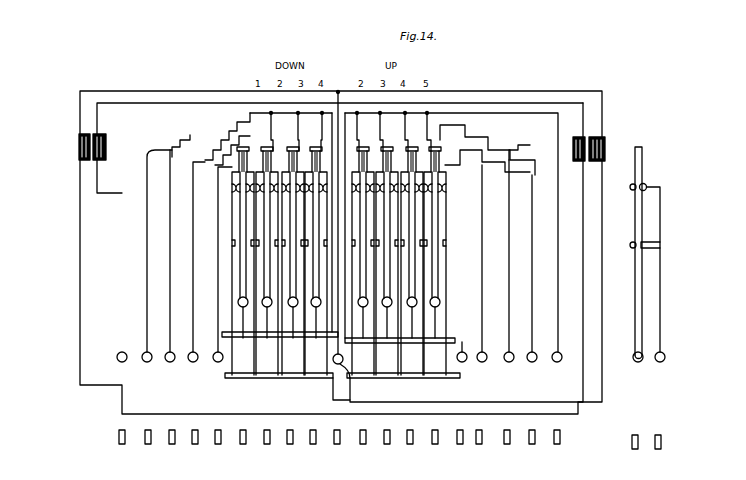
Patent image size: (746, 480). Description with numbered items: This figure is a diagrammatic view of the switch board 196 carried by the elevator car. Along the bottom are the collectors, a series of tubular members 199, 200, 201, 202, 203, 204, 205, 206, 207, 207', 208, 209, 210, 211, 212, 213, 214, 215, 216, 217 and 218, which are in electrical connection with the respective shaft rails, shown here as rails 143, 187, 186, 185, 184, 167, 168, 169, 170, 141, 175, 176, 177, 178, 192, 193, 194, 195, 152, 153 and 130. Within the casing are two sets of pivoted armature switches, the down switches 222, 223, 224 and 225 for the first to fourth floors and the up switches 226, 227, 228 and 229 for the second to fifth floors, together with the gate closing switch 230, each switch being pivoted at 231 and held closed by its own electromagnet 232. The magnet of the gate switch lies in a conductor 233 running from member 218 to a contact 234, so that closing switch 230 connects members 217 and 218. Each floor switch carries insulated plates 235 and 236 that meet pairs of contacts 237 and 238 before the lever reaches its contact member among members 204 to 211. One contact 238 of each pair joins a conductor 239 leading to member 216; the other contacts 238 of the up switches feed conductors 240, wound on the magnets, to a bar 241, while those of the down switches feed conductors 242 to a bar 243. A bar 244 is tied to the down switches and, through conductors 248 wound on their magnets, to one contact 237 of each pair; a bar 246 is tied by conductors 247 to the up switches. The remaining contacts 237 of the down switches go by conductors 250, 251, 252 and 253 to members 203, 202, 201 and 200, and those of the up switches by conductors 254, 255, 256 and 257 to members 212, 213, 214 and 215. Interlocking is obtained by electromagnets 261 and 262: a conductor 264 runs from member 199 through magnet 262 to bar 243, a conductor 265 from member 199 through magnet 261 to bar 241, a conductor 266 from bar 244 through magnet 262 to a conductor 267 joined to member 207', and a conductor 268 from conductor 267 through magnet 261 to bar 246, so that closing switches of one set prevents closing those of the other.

The rail 130 is at (661, 441).
The rail 141 is at (337, 446).
The rail 143 is at (120, 447).
The rail 152 is at (556, 446).
The rail 153 is at (632, 441).
The rail 167 is at (242, 446).
The rail 168 is at (264, 447).
The rail 169 is at (289, 446).
The rail 170 is at (313, 446).
The rail 175 is at (363, 446).
The rail 176 is at (386, 446).
The rail 177 is at (410, 446).
The rail 178 is at (434, 446).
The terminal 184 is at (215, 447).
The rail 185 is at (194, 446).
The rail 186 is at (170, 447).
The rail 187 is at (148, 446).
The rail 192 is at (459, 446).
The rail 193 is at (478, 446).
The rail 194 is at (506, 446).
The rail 195 is at (530, 446).
The switch board 196 is at (583, 88).
The tubular member 199 is at (118, 362).
The tubular member 200 is at (143, 353).
The tubular member 201 is at (168, 362).
The tubular member 202 is at (193, 362).
The tubular member 203 is at (215, 362).
The tubular member 204 is at (240, 195).
The tubular member 205 is at (252, 190).
The tubular member 206 is at (270, 190).
The tubular member 207 is at (253, 261).
The tubular member 207' is at (342, 384).
The tubular member 208 is at (426, 258).
The tubular member 209 is at (375, 195).
The tubular member 210 is at (398, 190).
The tubular member 211 is at (414, 184).
The tubular member 212 is at (462, 362).
The tubular member 213 is at (482, 362).
The tubular member 214 is at (509, 362).
The tubular member 215 is at (532, 362).
The tubular member 216 is at (557, 364).
The tubular member 217 is at (633, 363).
The tubular member 218 is at (664, 362).
The controlling switch 222 is at (242, 281).
The controlling switch 223 is at (268, 283).
The controlling switch 224 is at (292, 290).
The controlling switch 225 is at (328, 258).
The controlling switch 226 is at (440, 302).
The controlling switch 227 is at (455, 300).
The controlling switch 228 is at (455, 286).
The controlling switch 229 is at (380, 270).
The gate closing switch 230 is at (661, 326).
The pivot 231 is at (452, 302).
The electromagnet 232 is at (402, 264).
The conductor 233 is at (661, 294).
The contact 234 is at (648, 183).
The insulated plate 235 is at (205, 145).
The insulated plate 236 is at (247, 150).
The contacts 237 is at (232, 140).
The contacts 238 is at (250, 152).
The conductor 239 is at (585, 101).
The conductors 240 is at (440, 174).
The bar 241 is at (376, 379).
The conductors 242 is at (240, 185).
The bar 243 is at (265, 379).
The bar 244 is at (300, 379).
The bar 246 is at (410, 379).
The conductors 247 is at (445, 379).
The conductors 248 is at (224, 379).
The conductor 250 is at (172, 150).
The conductor 251 is at (170, 300).
The conductor 252 is at (170, 268).
The conductor 253 is at (147, 297).
The conductor 254 is at (520, 158).
The conductor 255 is at (540, 172).
The conductor 256 is at (538, 256).
The conductor 257 is at (533, 312).
The electromagnet 261 is at (78, 151).
The electromagnet 262 is at (596, 140).
The conductor 264 is at (408, 102).
The conductor 265 is at (135, 103).
The conductor 266 is at (636, 204).
The conductor 267 is at (338, 91).
The conductor 268 is at (89, 91).